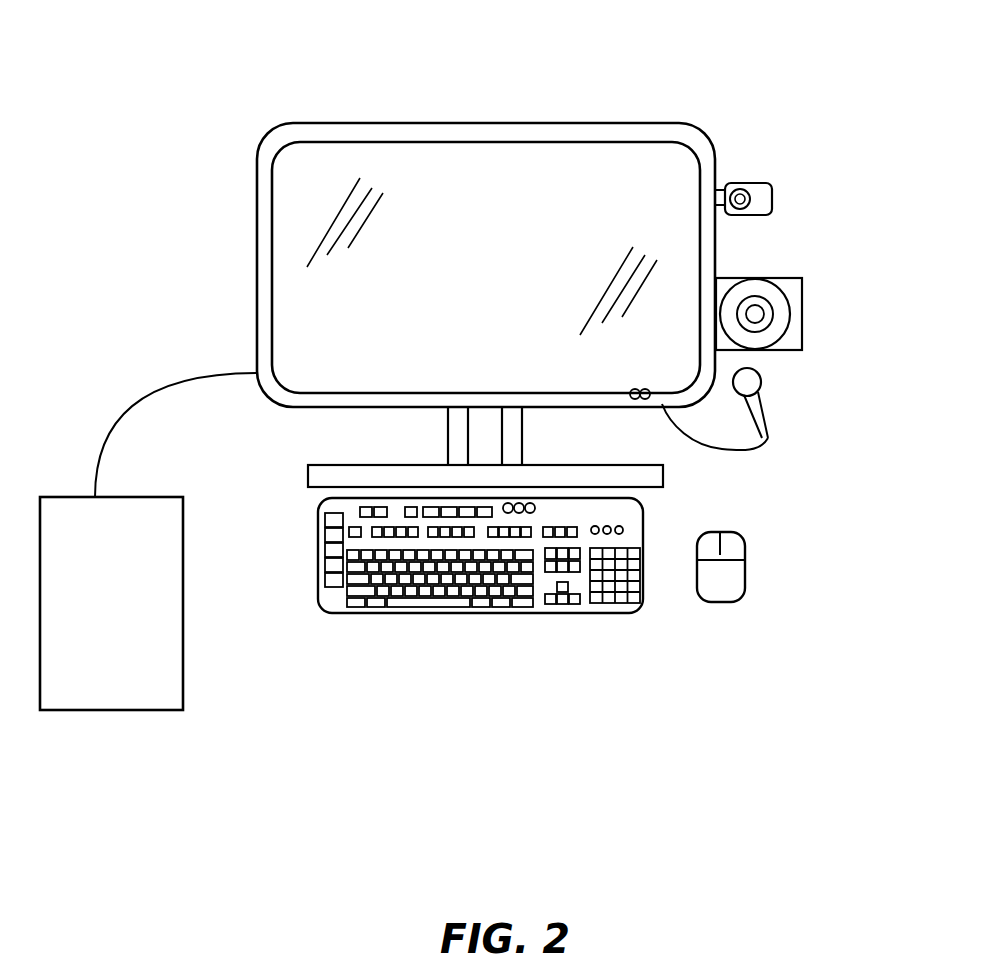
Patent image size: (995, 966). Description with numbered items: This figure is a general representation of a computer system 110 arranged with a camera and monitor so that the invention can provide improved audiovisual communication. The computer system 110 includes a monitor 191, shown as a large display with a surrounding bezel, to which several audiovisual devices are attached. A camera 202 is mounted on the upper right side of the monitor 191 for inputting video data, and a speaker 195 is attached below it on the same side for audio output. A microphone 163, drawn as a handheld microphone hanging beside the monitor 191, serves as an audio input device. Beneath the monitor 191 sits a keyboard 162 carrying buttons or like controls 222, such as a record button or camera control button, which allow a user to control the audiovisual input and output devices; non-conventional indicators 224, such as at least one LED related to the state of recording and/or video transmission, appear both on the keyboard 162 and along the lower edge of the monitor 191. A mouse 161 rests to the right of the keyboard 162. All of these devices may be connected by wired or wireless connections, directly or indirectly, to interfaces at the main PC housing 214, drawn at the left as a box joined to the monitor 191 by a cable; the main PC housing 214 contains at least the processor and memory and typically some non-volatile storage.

The computer system 110 is at (197, 76).
The monitor 191 is at (248, 157).
The camera 202 is at (770, 195).
The speaker 195 is at (797, 332).
The microphone 163 is at (757, 408).
The non-conventional indicators 224 is at (633, 404).
The buttons or like controls 222 is at (410, 507).
The keyboard 162 is at (590, 613).
The mouse 161 is at (747, 587).
The main PC housing 214 is at (170, 678).